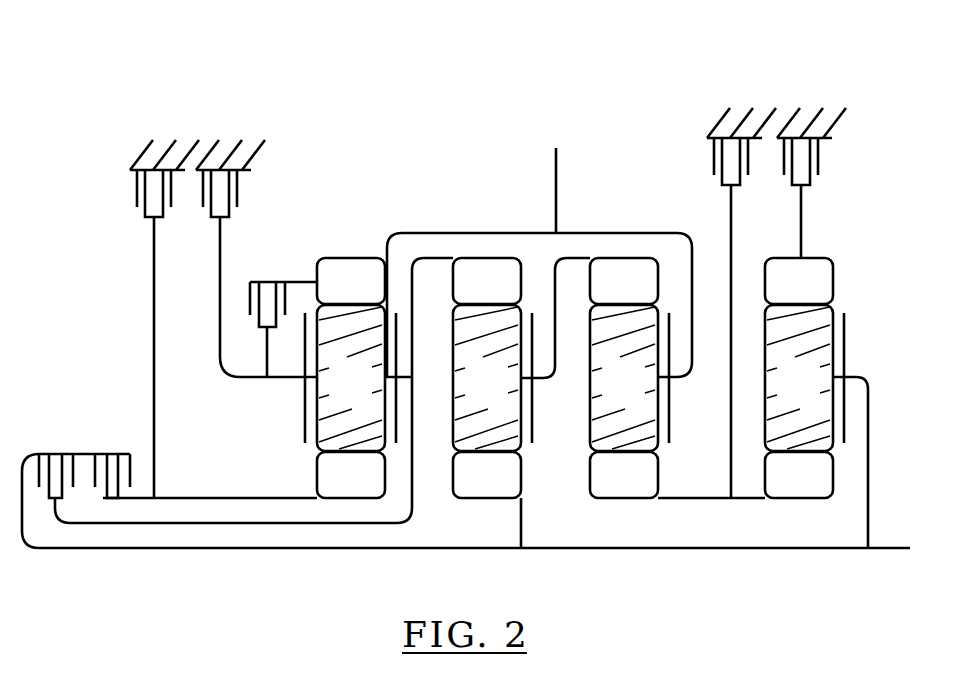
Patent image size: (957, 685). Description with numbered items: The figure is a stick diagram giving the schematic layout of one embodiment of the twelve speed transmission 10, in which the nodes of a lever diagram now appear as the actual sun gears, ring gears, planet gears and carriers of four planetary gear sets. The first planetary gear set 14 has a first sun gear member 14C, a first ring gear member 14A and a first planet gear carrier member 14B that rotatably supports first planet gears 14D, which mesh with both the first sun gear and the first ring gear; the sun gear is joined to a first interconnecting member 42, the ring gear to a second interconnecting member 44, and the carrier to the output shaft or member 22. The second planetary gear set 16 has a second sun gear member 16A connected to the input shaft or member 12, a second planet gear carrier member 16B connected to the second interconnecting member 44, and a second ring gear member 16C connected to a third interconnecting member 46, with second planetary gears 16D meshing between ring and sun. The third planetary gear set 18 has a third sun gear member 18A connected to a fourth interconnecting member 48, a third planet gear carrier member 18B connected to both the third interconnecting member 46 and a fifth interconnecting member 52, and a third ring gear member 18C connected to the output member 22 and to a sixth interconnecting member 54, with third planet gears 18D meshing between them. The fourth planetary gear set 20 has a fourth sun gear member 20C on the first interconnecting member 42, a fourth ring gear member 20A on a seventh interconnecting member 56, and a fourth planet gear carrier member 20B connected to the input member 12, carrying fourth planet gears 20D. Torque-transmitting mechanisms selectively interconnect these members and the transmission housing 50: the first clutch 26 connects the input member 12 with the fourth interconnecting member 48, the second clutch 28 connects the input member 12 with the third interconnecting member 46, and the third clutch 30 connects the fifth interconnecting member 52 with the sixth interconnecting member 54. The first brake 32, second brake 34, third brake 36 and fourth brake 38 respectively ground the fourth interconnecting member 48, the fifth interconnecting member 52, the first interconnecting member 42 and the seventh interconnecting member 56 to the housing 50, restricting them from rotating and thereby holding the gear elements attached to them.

The twelve speed transmission 10 is at (766, 69).
The input shaft or member 12 is at (880, 549).
The first planetary gear set 14 is at (654, 431).
The first ring gear member 14A is at (648, 294).
The first planet gear carrier member 14B is at (670, 423).
The first sun gear member 14C is at (648, 488).
The first set of planet gears 14D is at (648, 390).
The second planetary gear set 16 is at (516, 430).
The second sun gear member 16A is at (511, 488).
The second planet gear carrier member 16B is at (535, 422).
The second ring gear member 16C is at (511, 294).
The second set of planetary gears 16D is at (511, 390).
The third planetary gear set 18 is at (383, 393).
The third sun gear member 18A is at (375, 488).
The third planet gear carrier member 18B is at (402, 335).
The third ring gear member 18C is at (375, 294).
The third set of planet gears 18D is at (375, 390).
The fourth planetary gear set 20 is at (838, 431).
The fourth ring gear member 20A is at (823, 294).
The fourth planet gear carrier member 20B is at (845, 357).
The fourth sun gear member 20C is at (823, 488).
The fourth set of planet gears 20D is at (823, 390).
The output shaft or member 22 is at (556, 165).
The first clutch 26 is at (132, 470).
The second clutch 28 is at (75, 470).
The third clutch 30 is at (250, 303).
The first brake 32 is at (137, 197).
The second brake 34 is at (240, 197).
The third brake 36 is at (713, 157).
The fourth brake 38 is at (818, 162).
The first shaft or interconnecting member 42 is at (703, 499).
The second shaft or interconnecting member 44 is at (558, 342).
The third shaft or interconnecting member 46 is at (414, 353).
The fourth shaft or interconnecting member 48 is at (202, 498).
The transmission housing 50 is at (142, 152).
The fifth shaft or interconnecting member 52 is at (220, 340).
The sixth shaft or interconnecting member 54 is at (291, 282).
The seventh shaft or interconnecting member 56 is at (801, 224).